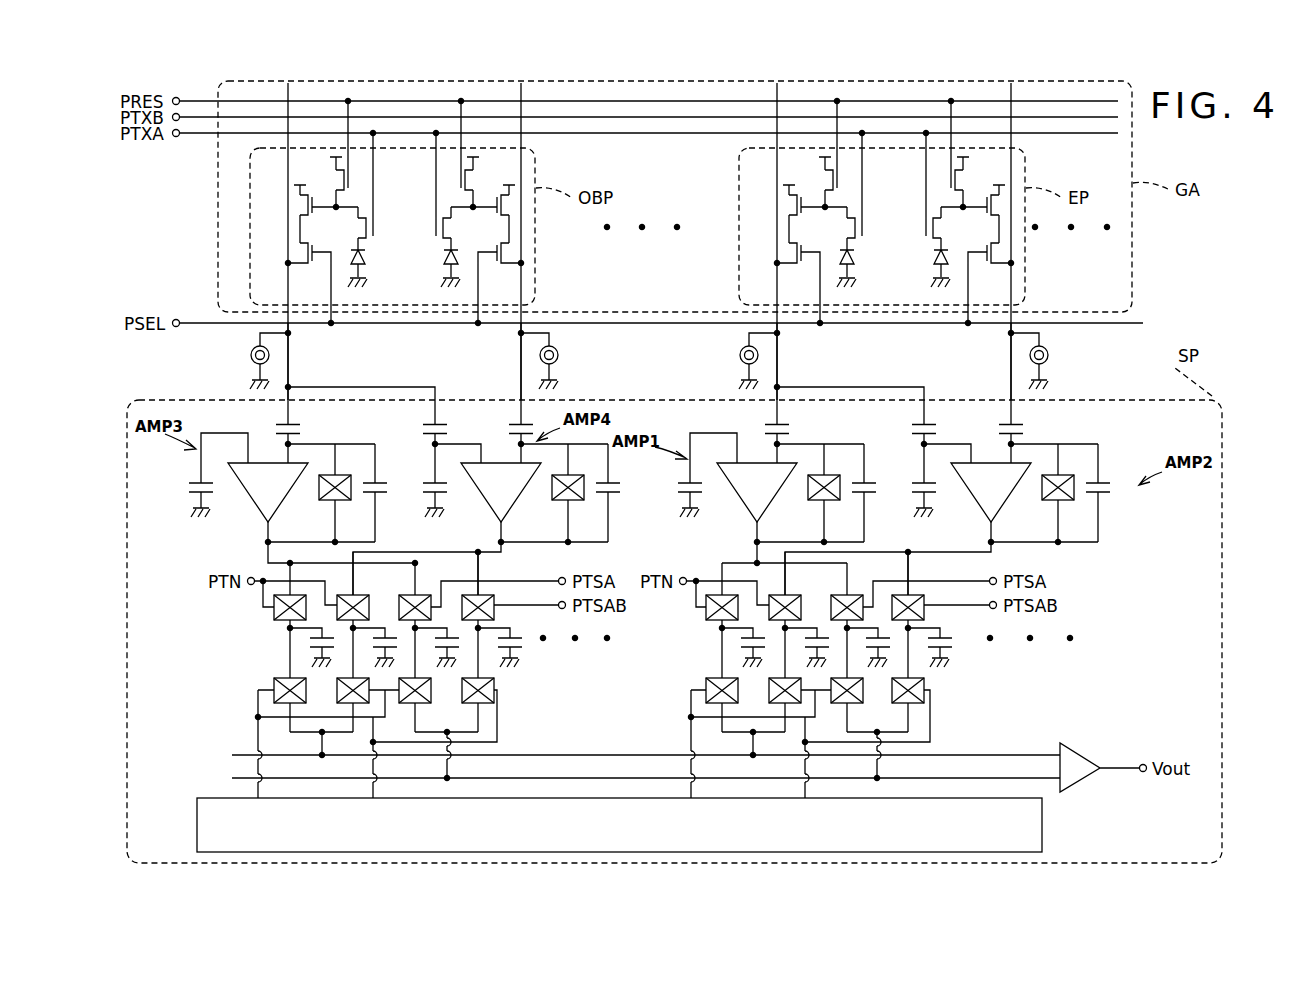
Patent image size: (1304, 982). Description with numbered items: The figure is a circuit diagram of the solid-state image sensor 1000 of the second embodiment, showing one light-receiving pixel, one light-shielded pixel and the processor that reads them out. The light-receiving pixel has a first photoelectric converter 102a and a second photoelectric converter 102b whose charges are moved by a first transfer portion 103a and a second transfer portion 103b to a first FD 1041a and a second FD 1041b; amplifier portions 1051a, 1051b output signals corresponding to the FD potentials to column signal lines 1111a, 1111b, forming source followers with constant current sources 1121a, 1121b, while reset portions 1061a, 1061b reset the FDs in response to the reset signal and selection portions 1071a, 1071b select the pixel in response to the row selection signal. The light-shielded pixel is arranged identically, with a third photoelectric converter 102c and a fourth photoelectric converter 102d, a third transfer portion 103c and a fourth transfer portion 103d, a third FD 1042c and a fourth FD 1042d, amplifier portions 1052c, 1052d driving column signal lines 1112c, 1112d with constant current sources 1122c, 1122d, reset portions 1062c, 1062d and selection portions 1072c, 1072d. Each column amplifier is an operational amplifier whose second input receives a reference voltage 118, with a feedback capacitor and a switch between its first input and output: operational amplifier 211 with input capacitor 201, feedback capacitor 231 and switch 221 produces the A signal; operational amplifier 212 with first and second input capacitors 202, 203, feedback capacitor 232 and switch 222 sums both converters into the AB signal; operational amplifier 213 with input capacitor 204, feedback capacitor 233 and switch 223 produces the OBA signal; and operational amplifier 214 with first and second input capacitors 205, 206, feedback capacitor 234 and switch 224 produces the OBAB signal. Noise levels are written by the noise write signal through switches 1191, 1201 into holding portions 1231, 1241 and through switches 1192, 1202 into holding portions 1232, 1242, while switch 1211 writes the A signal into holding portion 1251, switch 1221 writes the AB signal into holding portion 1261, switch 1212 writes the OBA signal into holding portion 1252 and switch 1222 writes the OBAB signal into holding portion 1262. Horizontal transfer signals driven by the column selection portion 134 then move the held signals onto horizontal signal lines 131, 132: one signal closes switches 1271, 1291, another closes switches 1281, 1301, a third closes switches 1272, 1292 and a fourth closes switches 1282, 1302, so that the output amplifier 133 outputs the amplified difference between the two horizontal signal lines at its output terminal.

The solid-state image sensor 1000 is at (141, 246).
The amplifier portion 1052c is at (300, 187).
The amplifier portion 1052d is at (510, 187).
The amplifier portion 1051a is at (789, 187).
The amplifier portion 1051b is at (1000, 187).
The third FD 1042c is at (320, 208).
The fourth FD 1042d is at (490, 210).
The first FD 1041a is at (808, 209).
The second FD 1041b is at (980, 210).
The selection portion 1072c is at (306, 265).
The selection portion 1072d is at (503, 266).
The selection portion 1071a is at (795, 265).
The selection portion 1071b is at (993, 266).
The reset portion 1062c is at (350, 186).
The reset portion 1062d is at (462, 186).
The reset portion 1061a is at (840, 186).
The reset portion 1061b is at (952, 186).
The third transfer portion 103c is at (370, 232).
The fourth transfer portion 103d is at (442, 236).
The first transfer portion 103a is at (859, 232).
The second transfer portion 103b is at (932, 236).
The third photoelectric converter 102c is at (365, 258).
The fourth photoelectric converter 102d is at (444, 262).
The first photoelectric converter 102a is at (854, 258).
The second photoelectric converter 102b is at (934, 262).
The constant current source 1122c is at (250, 356).
The constant current source 1122d is at (559, 357).
The constant current source 1121a is at (739, 356).
The constant current source 1121b is at (1049, 357).
The column signal line 1112c is at (290, 345).
The column signal line 1112d is at (519, 345).
The column signal line 1111a is at (779, 345).
The column signal line 1111b is at (1009, 345).
The input capacitor 204 is at (278, 425).
The first input capacitor 205 is at (426, 425).
The second input capacitor 206 is at (512, 425).
The input capacitor 201 is at (768, 425).
The first input capacitor 202 is at (916, 425).
The second input capacitor 203 is at (1002, 425).
The reference voltage 118 is at (196, 484).
The operational amplifier 213 is at (258, 507).
The operational amplifier 214 is at (488, 510).
The operational amplifier 211 is at (748, 507).
The operational amplifier 212 is at (978, 510).
The switch 223 is at (322, 497).
The switch 224 is at (555, 497).
The switch 221 is at (812, 497).
The switch 222 is at (1046, 497).
The feedback capacitor 233 is at (388, 495).
The feedback capacitor 234 is at (620, 495).
The feedback capacitor 231 is at (876, 495).
The feedback capacitor 232 is at (1110, 495).
The switch 1202 is at (350, 585).
The switch 1201 is at (775, 588).
The switch 1192 is at (275, 614).
The holding portion 1242 is at (390, 635).
The switch 1212 is at (424, 596).
The switch 1222 is at (495, 612).
The switch 1191 is at (706, 614).
The holding portion 1241 is at (822, 635).
The switch 1211 is at (857, 596).
The switch 1221 is at (925, 612).
The holding portion 1232 is at (306, 648).
The holding portion 1262 is at (522, 646).
The holding portion 1231 is at (740, 648).
The holding portion 1261 is at (950, 648).
The switch 1272 is at (274, 688).
The switch 1282 is at (338, 690).
The switch 1292 is at (431, 697).
The holding portion 1252 is at (495, 688).
The switch 1302 is at (497, 704).
The switch 1271 is at (706, 688).
The switch 1281 is at (770, 690).
The switch 1301 is at (838, 700).
The holding portion 1251 is at (924, 690).
The switch 1291 is at (877, 742).
The horizontal signal line 131 is at (236, 756).
The horizontal signal line 132 is at (236, 780).
The output amplifier 133 is at (1082, 755).
The column selection portion 134 is at (1042, 825).